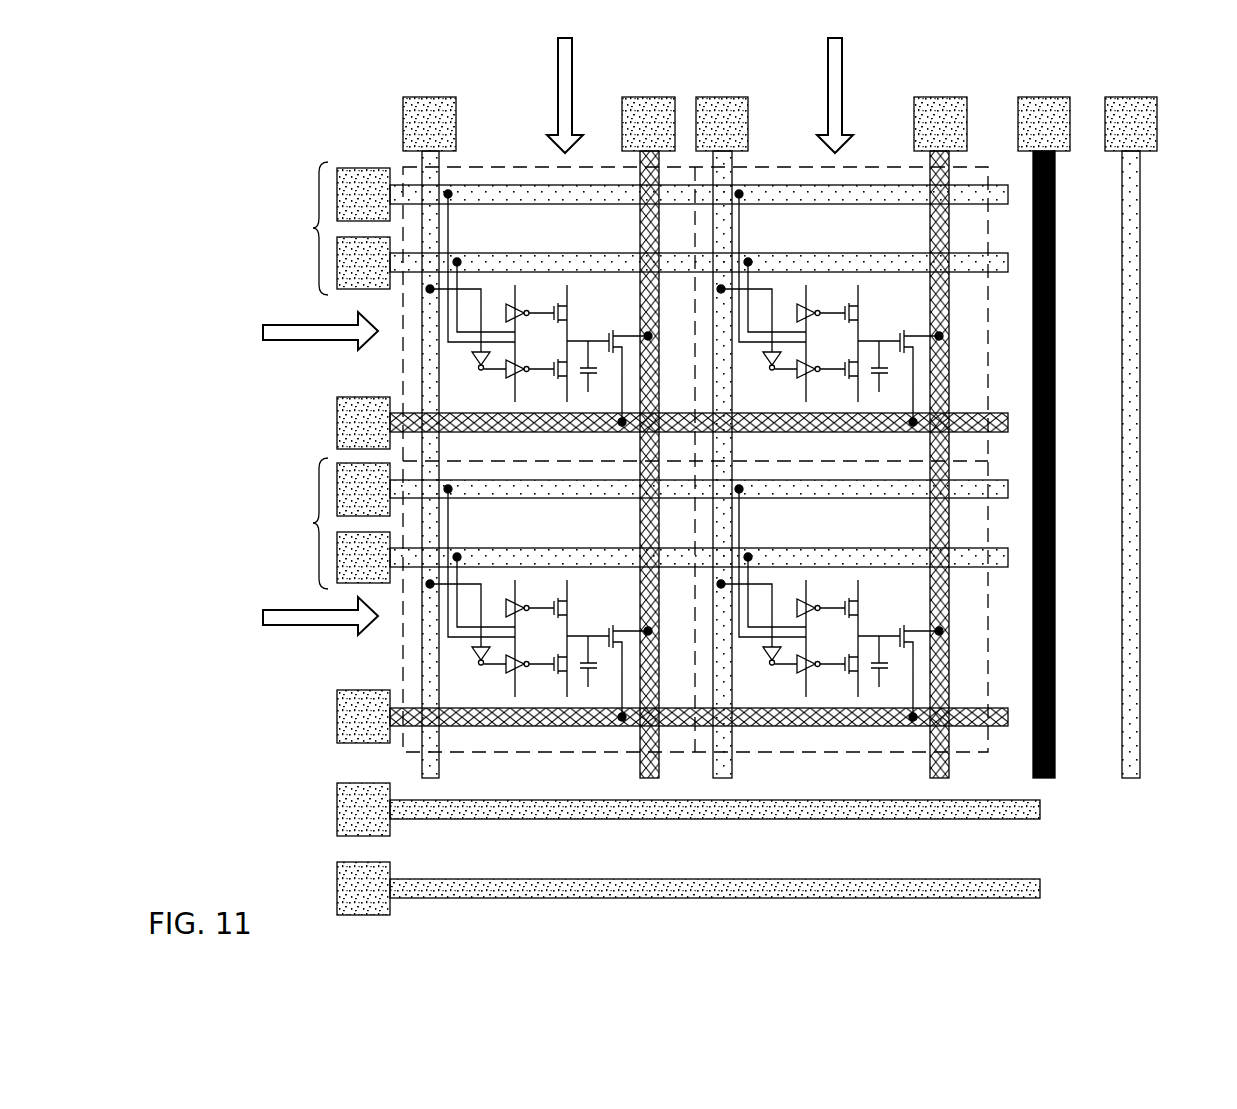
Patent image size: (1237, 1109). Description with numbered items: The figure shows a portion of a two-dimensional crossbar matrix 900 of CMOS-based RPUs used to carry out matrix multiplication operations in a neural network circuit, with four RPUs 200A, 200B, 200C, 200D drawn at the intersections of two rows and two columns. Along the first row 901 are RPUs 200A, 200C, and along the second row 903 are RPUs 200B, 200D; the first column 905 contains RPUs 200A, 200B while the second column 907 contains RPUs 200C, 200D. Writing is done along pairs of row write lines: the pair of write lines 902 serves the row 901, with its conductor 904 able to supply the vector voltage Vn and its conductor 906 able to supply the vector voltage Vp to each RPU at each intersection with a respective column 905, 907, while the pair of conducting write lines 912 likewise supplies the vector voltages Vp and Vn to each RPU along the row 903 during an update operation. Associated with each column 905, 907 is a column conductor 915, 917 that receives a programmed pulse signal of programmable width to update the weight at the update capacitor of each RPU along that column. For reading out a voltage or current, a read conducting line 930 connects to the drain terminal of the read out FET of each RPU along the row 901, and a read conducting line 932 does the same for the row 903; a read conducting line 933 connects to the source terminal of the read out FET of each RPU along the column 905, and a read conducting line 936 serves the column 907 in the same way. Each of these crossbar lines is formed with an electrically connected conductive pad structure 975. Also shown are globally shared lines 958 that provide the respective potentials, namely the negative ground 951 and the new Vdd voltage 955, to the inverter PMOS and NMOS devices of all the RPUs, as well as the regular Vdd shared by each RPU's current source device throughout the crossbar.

The crossbar matrix 900 is at (176, 48).
The row 901 is at (283, 324).
The pair of write lines 902 is at (313, 228).
The row 903 is at (283, 609).
The conductor 904 is at (532, 206).
The column 905 is at (558, 60).
The conductor 906 is at (815, 253).
The column 907 is at (842, 60).
The pair of conducting write lines 912 is at (313, 523).
The column conductor 915 is at (432, 177).
The column conductor 917 is at (723, 177).
The read conducting line 930 is at (502, 413).
The read conducting line 932 is at (502, 708).
The read conducting line 933 is at (640, 228).
The read conducting line 936 is at (930, 228).
The negative ground 951 is at (546, 879).
The Vdd voltage 955 is at (773, 819).
The globally shared lines 958 is at (1055, 252).
The conductive pad structures 975 is at (940, 97).
The RPU 200A is at (634, 304).
The RPU 200B is at (539, 603).
The RPU 200C is at (830, 308).
The RPU 200D is at (830, 603).